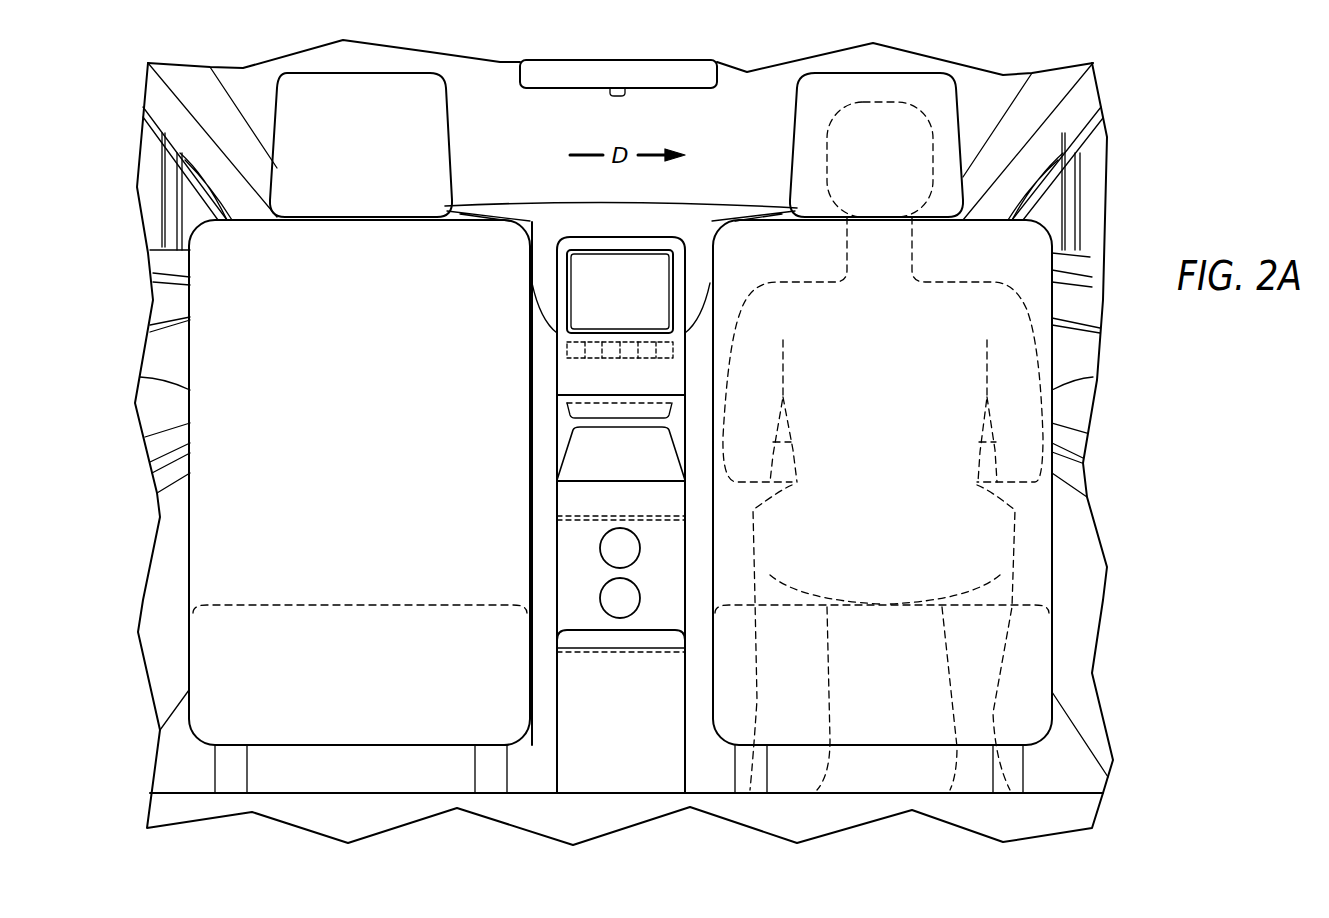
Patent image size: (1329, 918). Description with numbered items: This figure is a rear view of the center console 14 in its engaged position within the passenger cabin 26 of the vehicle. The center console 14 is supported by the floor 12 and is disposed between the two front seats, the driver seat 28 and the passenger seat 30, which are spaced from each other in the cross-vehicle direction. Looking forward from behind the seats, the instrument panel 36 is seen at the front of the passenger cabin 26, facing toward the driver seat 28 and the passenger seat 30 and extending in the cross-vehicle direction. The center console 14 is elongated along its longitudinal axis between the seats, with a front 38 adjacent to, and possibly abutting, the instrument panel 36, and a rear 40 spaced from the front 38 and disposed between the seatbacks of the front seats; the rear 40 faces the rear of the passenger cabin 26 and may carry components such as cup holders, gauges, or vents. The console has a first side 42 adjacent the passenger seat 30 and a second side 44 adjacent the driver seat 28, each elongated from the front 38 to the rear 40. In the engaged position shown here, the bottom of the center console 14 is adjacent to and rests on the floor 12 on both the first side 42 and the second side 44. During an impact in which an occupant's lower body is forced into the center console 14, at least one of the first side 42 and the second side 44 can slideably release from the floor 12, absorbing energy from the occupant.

The floor 12 is at (1077, 723).
The center console 14 is at (687, 687).
The passenger cabin 26 is at (728, 114).
The driver seat 28 is at (445, 232).
The passenger seat 30 is at (797, 232).
The instrument panel 36 is at (520, 204).
The front 38 is at (655, 395).
The rear 40 is at (608, 728).
The first side 42 is at (687, 530).
The second side 44 is at (554, 543).